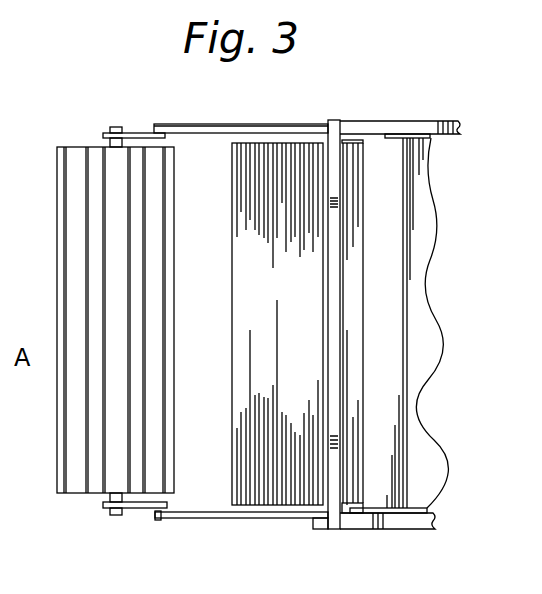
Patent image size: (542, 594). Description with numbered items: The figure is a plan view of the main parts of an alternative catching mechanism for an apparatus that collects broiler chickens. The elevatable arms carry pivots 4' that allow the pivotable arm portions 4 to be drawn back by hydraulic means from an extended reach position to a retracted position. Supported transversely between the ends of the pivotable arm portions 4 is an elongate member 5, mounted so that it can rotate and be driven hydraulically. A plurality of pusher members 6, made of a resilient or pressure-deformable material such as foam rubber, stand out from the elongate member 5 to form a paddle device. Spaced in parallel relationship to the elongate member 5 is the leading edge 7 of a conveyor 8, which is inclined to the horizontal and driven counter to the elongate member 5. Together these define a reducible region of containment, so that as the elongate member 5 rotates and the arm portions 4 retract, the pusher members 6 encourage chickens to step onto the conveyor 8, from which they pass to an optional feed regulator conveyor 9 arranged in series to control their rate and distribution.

The pivotable arm portions 4 is at (135, 355).
The pivots 4' is at (305, 351).
The elongate member 5 is at (100, 497).
The pusher members 6 is at (66, 448).
The leading edge 7 is at (232, 492).
The conveyor 8 is at (278, 505).
The feed regulator conveyor 9 is at (410, 480).